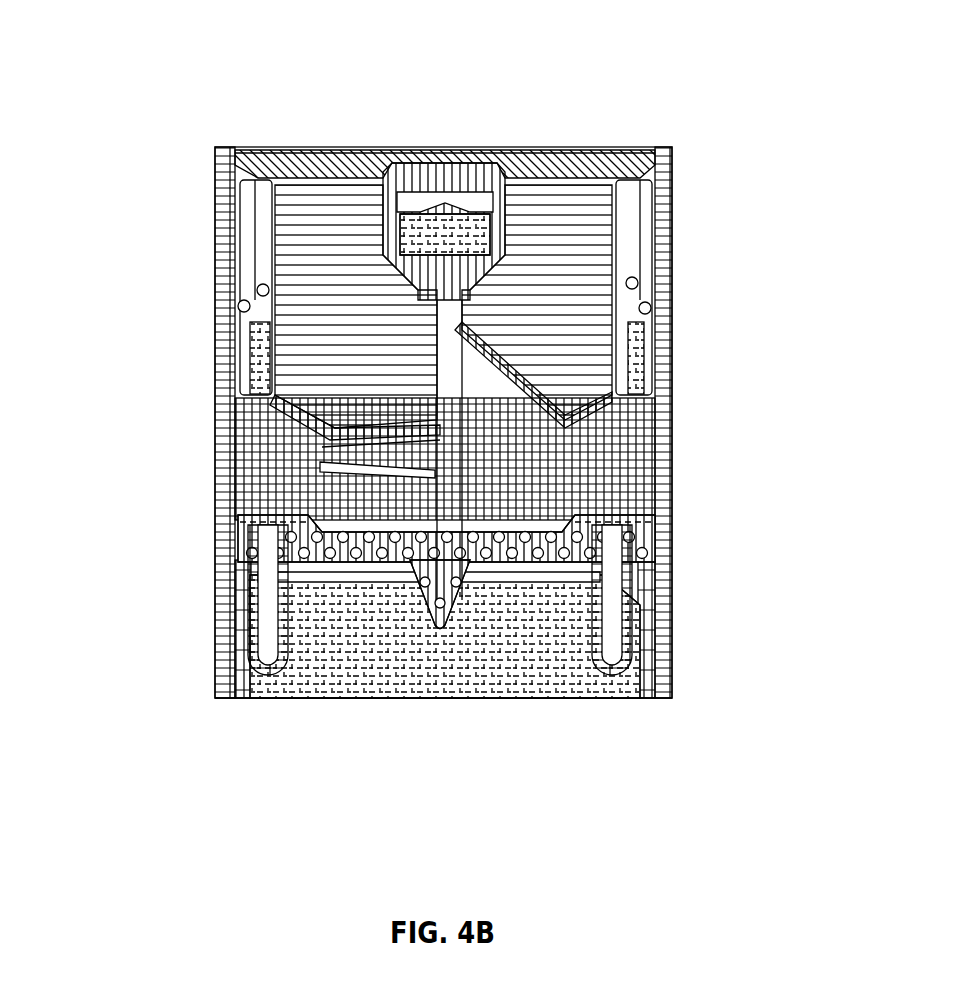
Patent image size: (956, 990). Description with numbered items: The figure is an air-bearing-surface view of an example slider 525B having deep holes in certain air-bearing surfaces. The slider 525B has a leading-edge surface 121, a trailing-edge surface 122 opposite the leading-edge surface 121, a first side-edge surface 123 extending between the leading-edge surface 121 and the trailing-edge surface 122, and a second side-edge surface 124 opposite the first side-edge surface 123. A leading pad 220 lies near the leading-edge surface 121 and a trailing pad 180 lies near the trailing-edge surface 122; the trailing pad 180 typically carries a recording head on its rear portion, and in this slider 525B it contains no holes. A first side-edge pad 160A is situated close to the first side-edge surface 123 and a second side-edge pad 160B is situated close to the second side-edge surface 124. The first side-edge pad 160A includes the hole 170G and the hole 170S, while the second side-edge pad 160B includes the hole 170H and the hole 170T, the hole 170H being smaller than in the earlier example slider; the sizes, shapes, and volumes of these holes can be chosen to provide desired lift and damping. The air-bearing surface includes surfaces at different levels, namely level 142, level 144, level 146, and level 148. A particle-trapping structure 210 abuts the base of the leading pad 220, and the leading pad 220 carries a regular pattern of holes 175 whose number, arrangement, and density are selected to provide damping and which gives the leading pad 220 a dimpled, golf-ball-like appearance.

The slider 525B is at (203, 90).
The trailing-edge surface 122 is at (521, 141).
The trailing pad 180 is at (492, 166).
The level 146 is at (590, 195).
The hole 170S is at (262, 285).
The first side-edge pad 160A is at (240, 282).
The hole 170G is at (240, 308).
The first side-edge surface 123 is at (214, 392).
The second side-edge surface 124 is at (676, 392).
The hole 170T is at (636, 280).
The second side-edge pad 160B is at (650, 272).
The hole 170H is at (650, 308).
The level 148 is at (228, 445).
The level 142 is at (238, 518).
The pattern of holes 175 is at (640, 562).
The particle-trapping structure 210 is at (262, 680).
The leading pad 220 is at (450, 625).
The level 144 is at (552, 680).
The leading-edge surface 121 is at (371, 702).